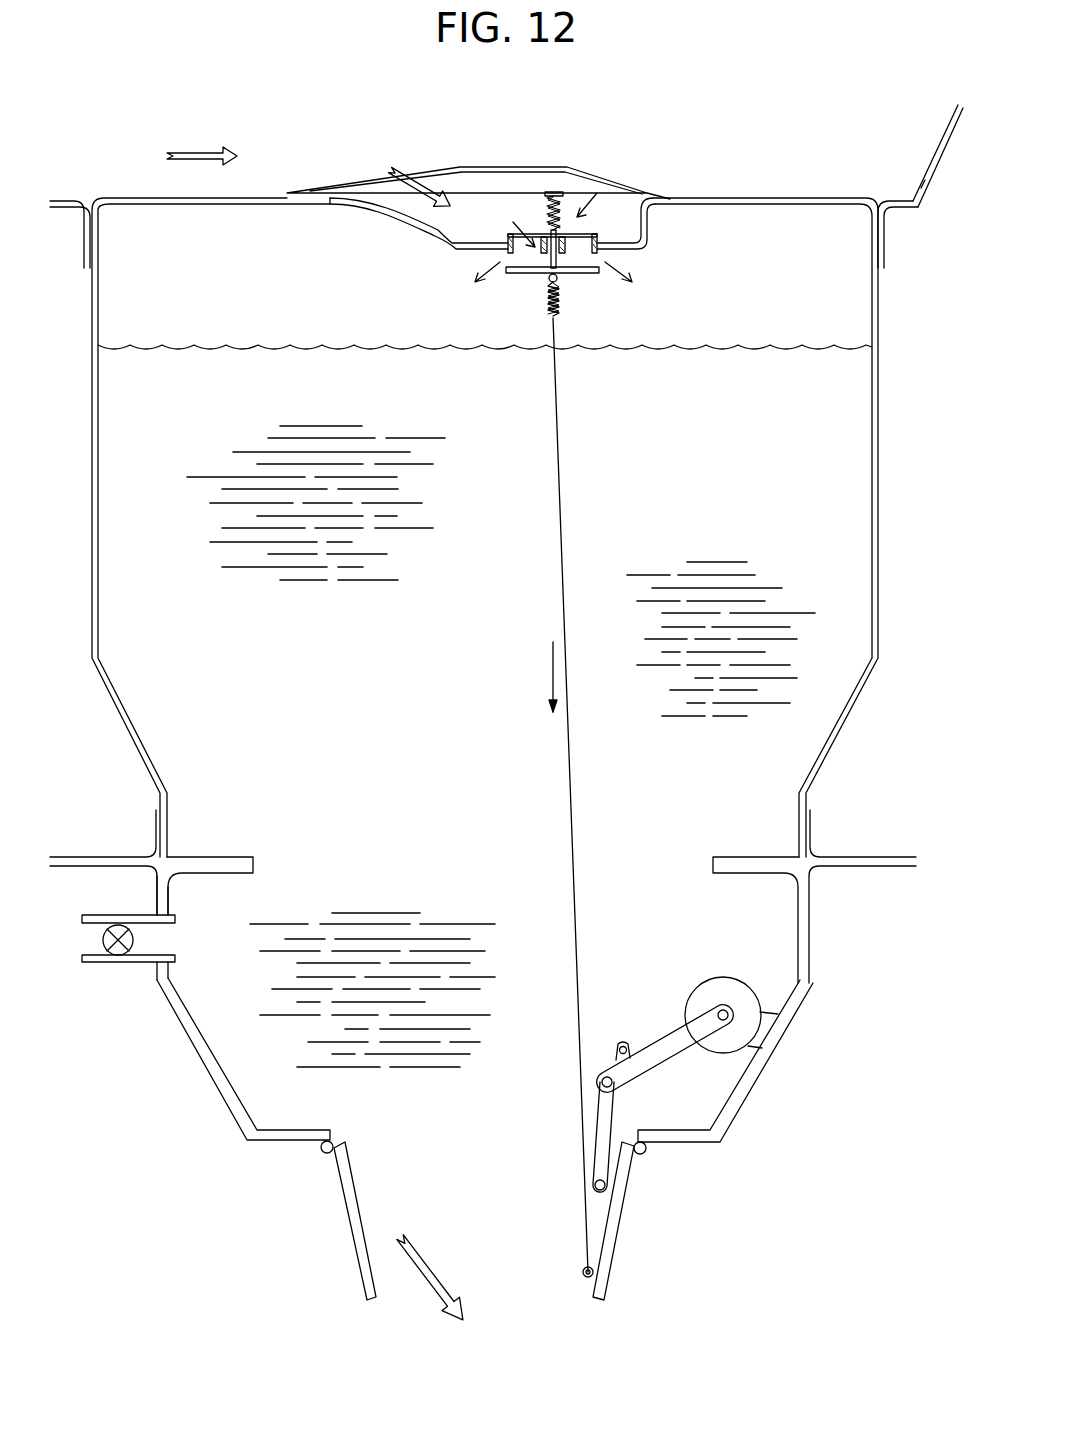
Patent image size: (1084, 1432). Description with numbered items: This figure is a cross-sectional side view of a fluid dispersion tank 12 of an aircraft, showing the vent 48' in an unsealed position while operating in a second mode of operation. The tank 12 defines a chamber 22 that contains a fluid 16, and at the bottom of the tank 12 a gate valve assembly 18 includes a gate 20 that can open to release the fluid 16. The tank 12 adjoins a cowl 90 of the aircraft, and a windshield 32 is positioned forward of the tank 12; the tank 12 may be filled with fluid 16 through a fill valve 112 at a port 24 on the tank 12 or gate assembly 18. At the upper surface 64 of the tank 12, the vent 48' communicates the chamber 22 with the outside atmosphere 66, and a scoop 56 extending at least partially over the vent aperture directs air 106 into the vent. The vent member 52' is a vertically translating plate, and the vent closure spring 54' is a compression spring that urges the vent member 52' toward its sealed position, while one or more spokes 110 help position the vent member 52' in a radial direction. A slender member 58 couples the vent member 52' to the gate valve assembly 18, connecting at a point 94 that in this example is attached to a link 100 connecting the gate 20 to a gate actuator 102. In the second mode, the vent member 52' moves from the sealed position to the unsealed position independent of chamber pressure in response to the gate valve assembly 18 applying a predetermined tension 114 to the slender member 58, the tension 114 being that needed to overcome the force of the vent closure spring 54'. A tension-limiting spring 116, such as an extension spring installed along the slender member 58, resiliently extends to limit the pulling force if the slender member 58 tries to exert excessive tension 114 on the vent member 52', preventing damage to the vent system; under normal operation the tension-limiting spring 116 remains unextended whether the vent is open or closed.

The fluid dispersion tank 12 is at (795, 197).
The fluid 16 is at (306, 346).
The gate valve assembly 18 is at (197, 1055).
The gate 20 is at (353, 1230).
The chamber 22 is at (198, 282).
The port 24 is at (90, 963).
The windshield 32 is at (938, 133).
The vent 48' is at (478, 149).
The vent member 52' is at (534, 298).
The vent closure spring 54' is at (573, 183).
The scoop 56 is at (590, 245).
The slender member 58 is at (565, 475).
The upper surface 64 is at (735, 197).
The outside atmosphere 66 is at (322, 97).
The cowl 90 is at (62, 197).
The point 94 is at (583, 1271).
The link 100 is at (657, 1040).
The gate actuator 102 is at (720, 977).
The air 106 is at (195, 150).
The spoke 110 is at (595, 215).
The fill valve 112 is at (137, 938).
The tension 114 is at (547, 680).
The tension-limiting spring 116 is at (563, 295).